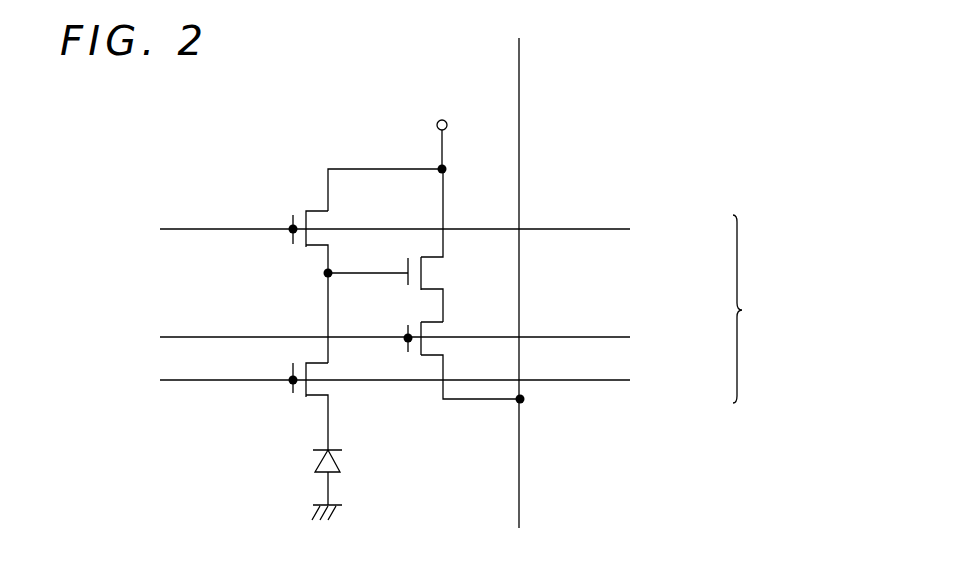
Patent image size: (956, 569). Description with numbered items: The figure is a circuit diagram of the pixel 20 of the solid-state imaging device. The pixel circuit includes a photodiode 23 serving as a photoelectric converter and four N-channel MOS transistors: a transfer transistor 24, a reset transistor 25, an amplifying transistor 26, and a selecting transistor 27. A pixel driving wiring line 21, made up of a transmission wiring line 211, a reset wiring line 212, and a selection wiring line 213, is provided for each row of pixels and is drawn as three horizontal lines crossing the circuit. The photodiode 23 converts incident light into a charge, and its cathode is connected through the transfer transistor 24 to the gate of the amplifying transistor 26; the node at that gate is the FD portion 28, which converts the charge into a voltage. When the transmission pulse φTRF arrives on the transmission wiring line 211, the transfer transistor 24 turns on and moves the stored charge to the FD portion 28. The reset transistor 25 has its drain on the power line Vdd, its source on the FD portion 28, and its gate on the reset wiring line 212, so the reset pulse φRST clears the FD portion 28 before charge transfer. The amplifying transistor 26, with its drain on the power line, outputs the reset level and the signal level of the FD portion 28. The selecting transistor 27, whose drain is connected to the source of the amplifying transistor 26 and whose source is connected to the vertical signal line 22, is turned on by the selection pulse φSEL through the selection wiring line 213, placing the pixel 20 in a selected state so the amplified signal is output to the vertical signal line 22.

The pixel 20 is at (626, 77).
The pixel driving wiring line 21 is at (750, 309).
The vertical signal line 22 is at (519, 152).
The photodiode 23 is at (338, 462).
The transfer transistor 24 is at (318, 372).
The reset transistor 25 is at (318, 222).
The amplifying transistor 26 is at (432, 272).
The selecting transistor 27 is at (432, 330).
The FD portion 28 is at (322, 274).
The transmission wiring line 211 is at (602, 381).
The reset wiring line 212 is at (602, 230).
The selection wiring line 213 is at (602, 338).